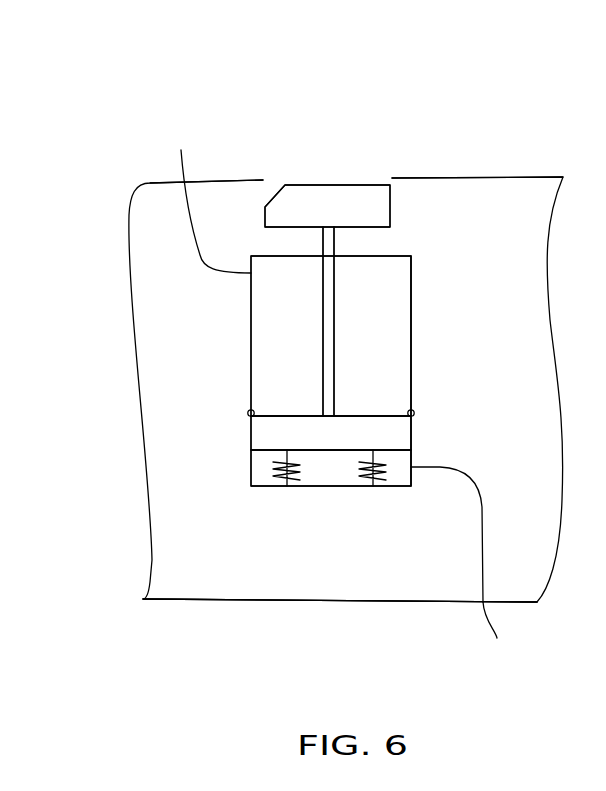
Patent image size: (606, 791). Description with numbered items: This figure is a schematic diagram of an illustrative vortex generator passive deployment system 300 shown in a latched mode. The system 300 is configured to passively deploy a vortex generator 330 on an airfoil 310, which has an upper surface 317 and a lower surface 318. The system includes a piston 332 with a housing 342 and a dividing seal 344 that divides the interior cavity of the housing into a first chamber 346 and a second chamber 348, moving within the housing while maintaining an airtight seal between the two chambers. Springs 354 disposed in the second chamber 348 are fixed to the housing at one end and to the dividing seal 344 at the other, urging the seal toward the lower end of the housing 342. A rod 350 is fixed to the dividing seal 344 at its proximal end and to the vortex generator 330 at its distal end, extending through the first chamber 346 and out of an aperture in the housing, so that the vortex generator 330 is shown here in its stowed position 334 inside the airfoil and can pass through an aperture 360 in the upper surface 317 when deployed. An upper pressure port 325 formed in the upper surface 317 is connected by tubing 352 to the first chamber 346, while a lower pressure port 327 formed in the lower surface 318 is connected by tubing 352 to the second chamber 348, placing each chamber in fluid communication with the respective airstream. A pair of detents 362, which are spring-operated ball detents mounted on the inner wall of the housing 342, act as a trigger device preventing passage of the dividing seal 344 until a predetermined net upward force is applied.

The vortex generator deployment system 300 is at (108, 150).
The upper surface 317 is at (242, 166).
The upper pressure port 325 is at (209, 195).
The aperture 360 is at (378, 185).
The vortex generator 330 is at (384, 199).
The stowed position 334 is at (428, 243).
The rod 350 is at (330, 370).
The piston 332 is at (231, 351).
The first chamber 346 is at (263, 293).
The housing 342 is at (411, 325).
The detents 362 is at (248, 411).
The dividing seal 344 is at (400, 442).
The second chamber 348 is at (265, 467).
The springs 354 is at (290, 480).
The tubing 352 is at (480, 505).
The lower pressure port 327 is at (497, 639).
The airfoil 310 is at (163, 600).
The lower surface 318 is at (254, 614).